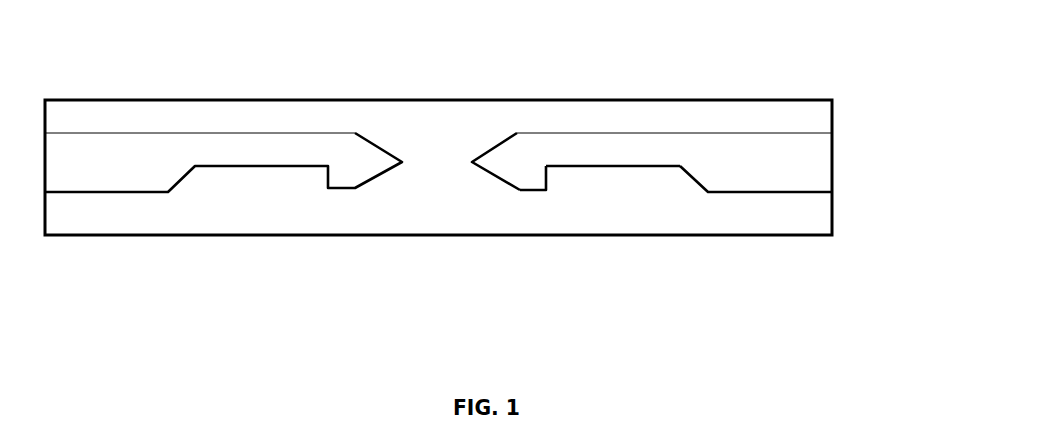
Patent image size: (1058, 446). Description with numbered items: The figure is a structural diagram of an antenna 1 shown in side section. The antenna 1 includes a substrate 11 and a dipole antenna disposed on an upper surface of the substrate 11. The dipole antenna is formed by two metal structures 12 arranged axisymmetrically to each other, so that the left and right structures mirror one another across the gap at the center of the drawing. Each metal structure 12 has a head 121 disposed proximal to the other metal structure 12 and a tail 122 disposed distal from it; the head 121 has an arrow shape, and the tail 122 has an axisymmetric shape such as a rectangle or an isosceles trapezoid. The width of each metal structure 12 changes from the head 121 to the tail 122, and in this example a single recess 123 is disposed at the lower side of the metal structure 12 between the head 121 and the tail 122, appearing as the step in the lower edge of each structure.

The antenna 1 is at (452, 229).
The substrate 11 is at (284, 246).
The metal structure 12 is at (732, 107).
The head 121 is at (465, 104).
The tail 122 is at (804, 211).
The recess 123 is at (620, 252).